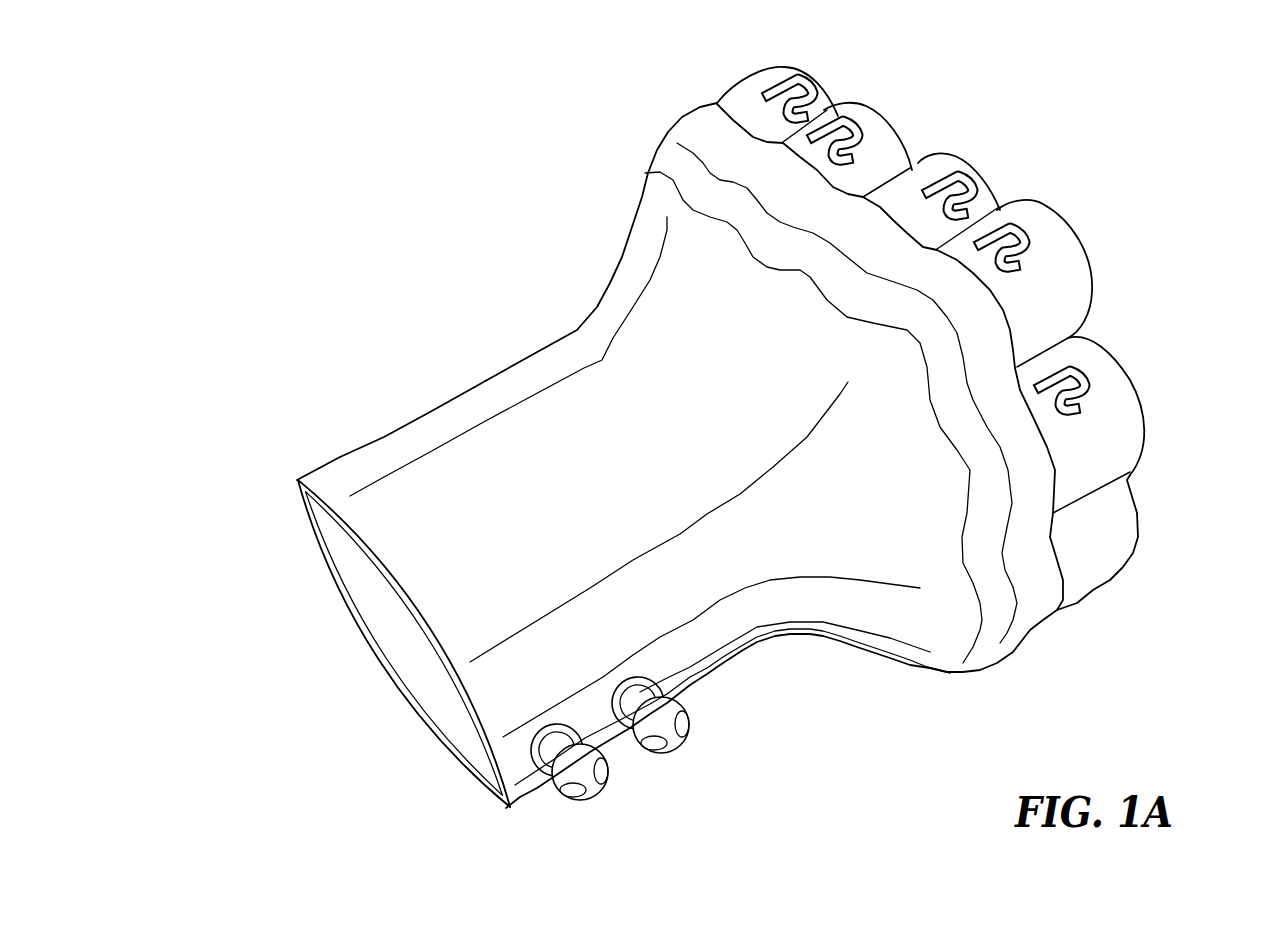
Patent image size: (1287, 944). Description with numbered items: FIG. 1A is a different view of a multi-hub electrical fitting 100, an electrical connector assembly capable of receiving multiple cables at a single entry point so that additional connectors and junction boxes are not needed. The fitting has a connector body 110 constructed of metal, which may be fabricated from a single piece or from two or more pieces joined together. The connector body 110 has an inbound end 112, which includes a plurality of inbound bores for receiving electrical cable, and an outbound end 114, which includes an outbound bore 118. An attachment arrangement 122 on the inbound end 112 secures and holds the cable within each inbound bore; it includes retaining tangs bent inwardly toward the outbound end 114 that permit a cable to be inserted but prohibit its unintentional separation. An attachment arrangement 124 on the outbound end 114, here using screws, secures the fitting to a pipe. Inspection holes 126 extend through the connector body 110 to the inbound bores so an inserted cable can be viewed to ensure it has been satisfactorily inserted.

The multi-hub electrical fitting 100 is at (748, 424).
The connector body 110 is at (460, 330).
The inbound end 112 is at (1177, 423).
The outbound end 114 is at (335, 666).
The outbound bore 118 is at (370, 568).
The attachment arrangement 122 is at (868, 114).
The attachment arrangement 124 is at (690, 738).
The inspection holes 126 is at (790, 84).